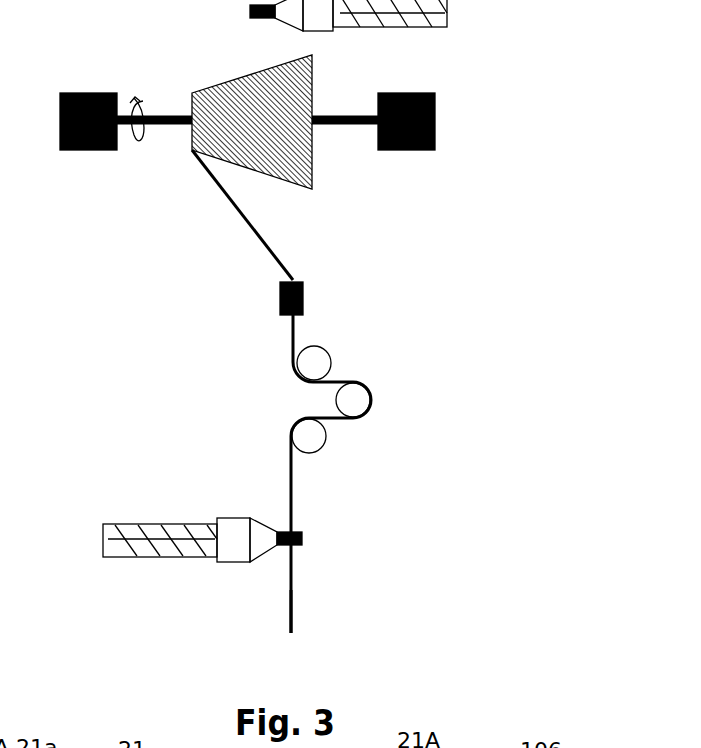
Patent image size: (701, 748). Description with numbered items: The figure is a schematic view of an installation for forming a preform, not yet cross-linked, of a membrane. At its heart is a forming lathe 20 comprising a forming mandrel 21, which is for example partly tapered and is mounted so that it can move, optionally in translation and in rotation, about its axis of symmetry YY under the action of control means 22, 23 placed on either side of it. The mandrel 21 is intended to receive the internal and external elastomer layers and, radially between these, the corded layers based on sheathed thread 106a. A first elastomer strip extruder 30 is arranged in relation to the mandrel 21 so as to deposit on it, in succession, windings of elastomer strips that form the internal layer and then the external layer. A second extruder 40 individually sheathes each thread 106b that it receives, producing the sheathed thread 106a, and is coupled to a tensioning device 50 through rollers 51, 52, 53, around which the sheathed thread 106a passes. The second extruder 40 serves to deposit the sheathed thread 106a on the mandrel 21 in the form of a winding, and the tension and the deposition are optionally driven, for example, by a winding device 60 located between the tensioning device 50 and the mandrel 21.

The forming lathe 20 is at (310, 112).
The forming mandrel 21 is at (230, 80).
The control means 22 is at (82, 93).
The control means 23 is at (406, 93).
The first elastomer strip extruder 30 is at (455, 10).
The second extruder 40 is at (92, 530).
The tensioning device 50 is at (393, 397).
The roller 51 is at (322, 447).
The roller 52 is at (372, 400).
The roller 53 is at (319, 352).
The winding device 60 is at (278, 291).
The sheathed thread 106a is at (288, 467).
The thread 106b is at (288, 582).
The axis of symmetry YY is at (353, 126).